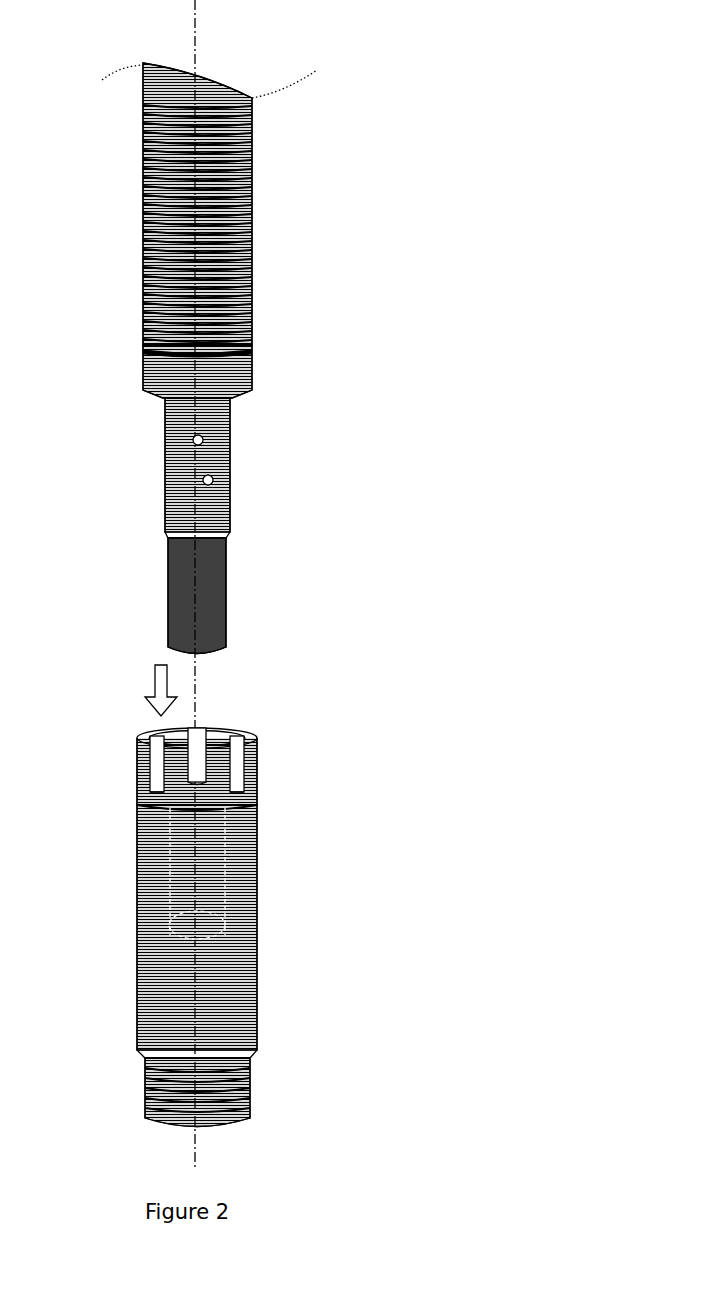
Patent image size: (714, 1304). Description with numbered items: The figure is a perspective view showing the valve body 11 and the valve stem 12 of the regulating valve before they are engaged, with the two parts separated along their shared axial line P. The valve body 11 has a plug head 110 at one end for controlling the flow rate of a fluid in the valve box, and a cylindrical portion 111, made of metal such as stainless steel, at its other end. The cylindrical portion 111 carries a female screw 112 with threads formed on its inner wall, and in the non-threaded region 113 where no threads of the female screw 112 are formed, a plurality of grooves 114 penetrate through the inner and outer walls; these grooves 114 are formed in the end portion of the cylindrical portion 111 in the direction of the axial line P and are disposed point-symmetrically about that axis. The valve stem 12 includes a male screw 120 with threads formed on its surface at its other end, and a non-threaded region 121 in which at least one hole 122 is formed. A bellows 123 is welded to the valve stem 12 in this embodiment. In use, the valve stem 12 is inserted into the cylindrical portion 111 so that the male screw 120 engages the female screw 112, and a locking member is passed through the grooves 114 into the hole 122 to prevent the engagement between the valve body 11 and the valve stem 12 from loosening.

The axial line P is at (192, 13).
The valve body 11 is at (244, 930).
The valve stem 12 is at (246, 355).
The plug head 110 is at (259, 1088).
The cylindrical portion 111 is at (213, 889).
The female screw 112 is at (258, 1050).
The non-threaded region 113 is at (232, 775).
The grooves 114 is at (142, 781).
The male screw 120 is at (251, 596).
The non-threaded region 121 is at (203, 468).
The hole 122 is at (192, 440).
The bellows 123 is at (252, 207).